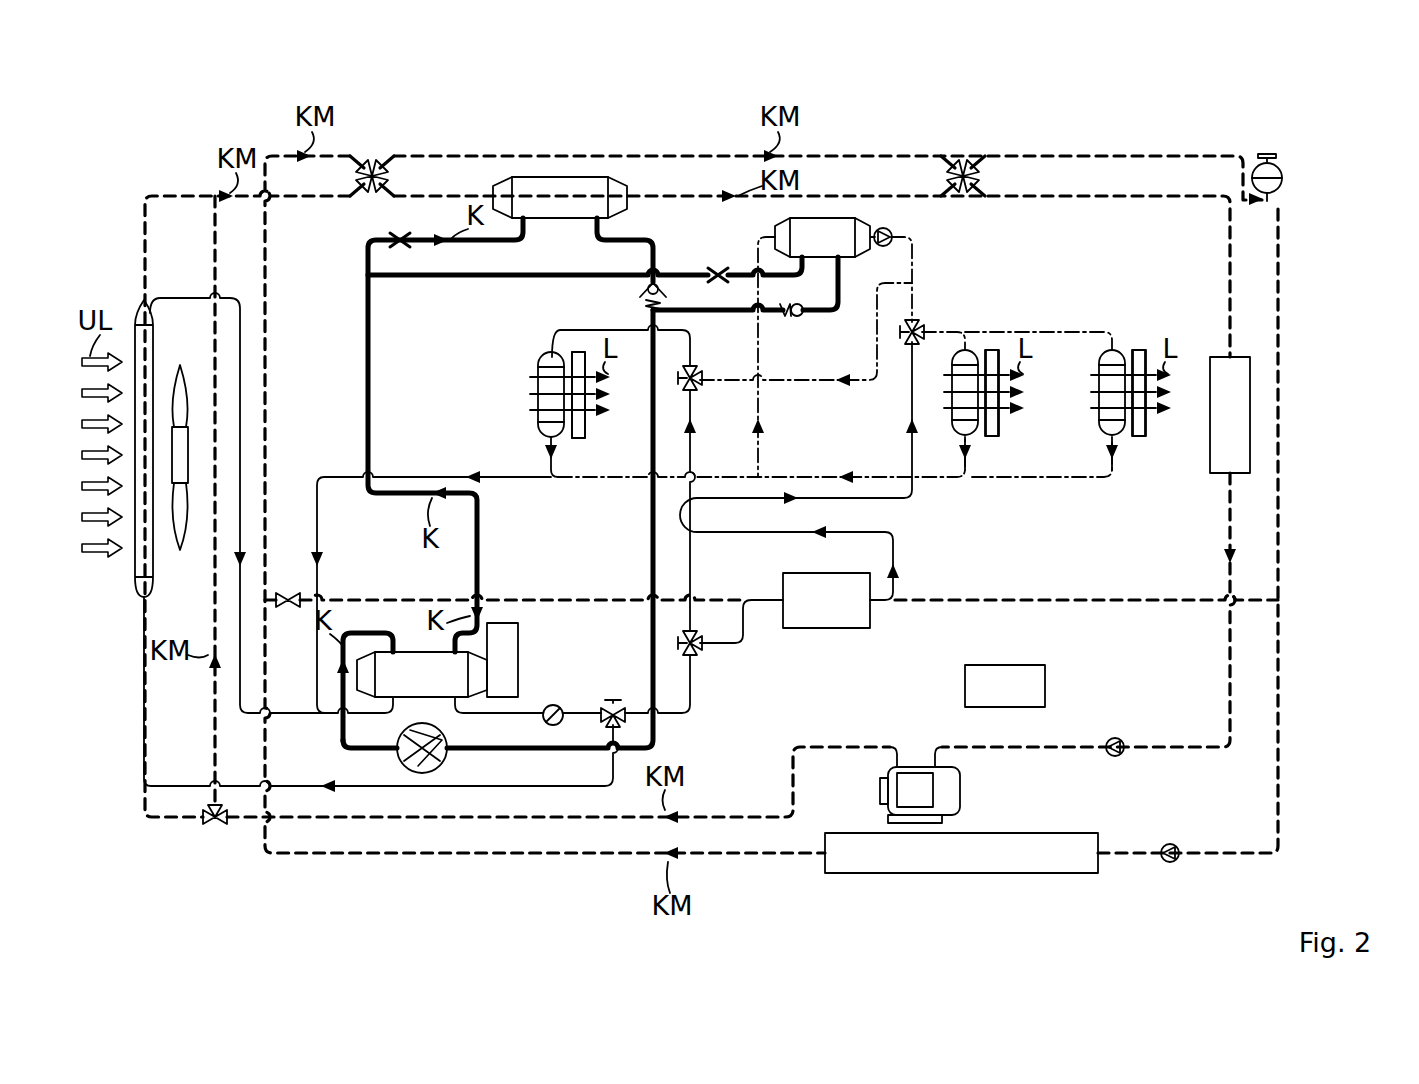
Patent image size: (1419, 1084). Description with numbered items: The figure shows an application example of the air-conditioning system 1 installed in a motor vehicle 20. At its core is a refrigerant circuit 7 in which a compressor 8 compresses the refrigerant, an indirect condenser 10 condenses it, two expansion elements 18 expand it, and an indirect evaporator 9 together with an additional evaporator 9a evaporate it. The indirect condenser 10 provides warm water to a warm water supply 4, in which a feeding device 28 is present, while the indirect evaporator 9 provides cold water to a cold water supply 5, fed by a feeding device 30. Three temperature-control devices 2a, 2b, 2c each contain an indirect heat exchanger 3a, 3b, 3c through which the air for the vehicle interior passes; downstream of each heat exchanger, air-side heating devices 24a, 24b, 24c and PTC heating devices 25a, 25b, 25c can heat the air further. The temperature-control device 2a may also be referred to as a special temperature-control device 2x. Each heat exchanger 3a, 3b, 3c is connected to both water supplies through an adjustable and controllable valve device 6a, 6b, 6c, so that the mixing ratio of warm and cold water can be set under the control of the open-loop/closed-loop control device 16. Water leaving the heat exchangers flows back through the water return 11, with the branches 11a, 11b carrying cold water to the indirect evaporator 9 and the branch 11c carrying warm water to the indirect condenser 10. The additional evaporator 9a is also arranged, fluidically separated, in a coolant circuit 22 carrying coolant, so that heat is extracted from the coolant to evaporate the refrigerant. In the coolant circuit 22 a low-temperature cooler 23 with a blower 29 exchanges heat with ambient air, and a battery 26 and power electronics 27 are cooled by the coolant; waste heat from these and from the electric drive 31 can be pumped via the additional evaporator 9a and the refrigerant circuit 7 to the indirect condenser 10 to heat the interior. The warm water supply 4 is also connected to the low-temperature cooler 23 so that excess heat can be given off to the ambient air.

The air-conditioning system 1 is at (1292, 134).
The motor vehicle 20 is at (1362, 164).
The coolant circuit 22 is at (1075, 156).
The refrigerant circuit 7 is at (350, 380).
The warm water supply 4 is at (893, 392).
The water return 11 is at (418, 470).
The water return 11a is at (548, 468).
The water return 11b is at (968, 467).
The water return 11c is at (1115, 467).
The expansion element 18 is at (398, 236).
The additional evaporator 9a is at (545, 213).
The indirect evaporator 9 is at (811, 252).
The feeding device 30 is at (878, 248).
The cold water supply 5 is at (938, 244).
The valve device 6a is at (698, 373).
The valve device 6b is at (921, 326).
The valve device 6c is at (952, 313).
The temperature-control device 2a is at (541, 379).
The special temperature-control device 2x is at (541, 379).
The temperature-control device 2b is at (993, 435).
The temperature-control device 2c is at (1129, 371).
The heat exchanger 3a is at (536, 376).
The heat exchanger 3b is at (960, 428).
The heat exchanger 3c is at (1098, 376).
The air-side heating device 24a is at (616, 412).
The PTC heating device 25a is at (586, 432).
The air-side heating device 24b is at (1027, 411).
The PTC heating device 25b is at (999, 432).
The air-side heating device 24c is at (1174, 411).
The PTC heating device 25c is at (1146, 432).
The power electronics 27 is at (1217, 426).
The low-temperature cooler 23 is at (133, 562).
The blower 29 is at (182, 552).
The indirect condenser 10 is at (408, 687).
The compressor 8 is at (447, 740).
The feeding device 28 is at (553, 703).
The open-loop/closed-loop control device 16 is at (1046, 685).
The electric drive 31 is at (912, 763).
The battery 26 is at (948, 869).